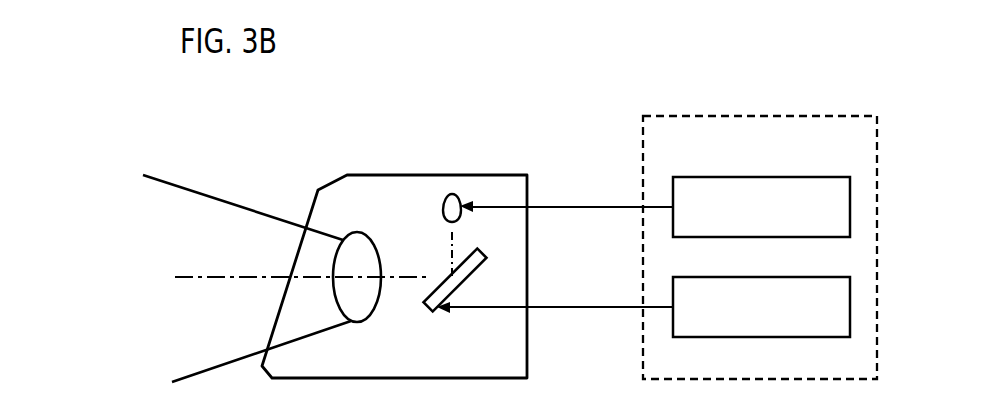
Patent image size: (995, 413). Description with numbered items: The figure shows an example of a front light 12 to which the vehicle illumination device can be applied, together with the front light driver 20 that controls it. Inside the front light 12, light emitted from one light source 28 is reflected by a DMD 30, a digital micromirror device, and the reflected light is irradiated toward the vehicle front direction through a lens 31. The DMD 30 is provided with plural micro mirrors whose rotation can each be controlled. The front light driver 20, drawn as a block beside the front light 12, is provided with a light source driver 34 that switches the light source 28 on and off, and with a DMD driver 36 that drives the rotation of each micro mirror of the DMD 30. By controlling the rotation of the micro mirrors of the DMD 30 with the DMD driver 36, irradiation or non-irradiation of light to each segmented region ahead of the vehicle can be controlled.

The front light 12 is at (508, 174).
The front light driver 20 is at (758, 116).
The light source 28 is at (451, 194).
The DMD (Digital Micromirror Device) 30 is at (488, 262).
The lens 31 is at (373, 312).
The light source driver 34 is at (762, 176).
The DMD driver 36 is at (762, 276).